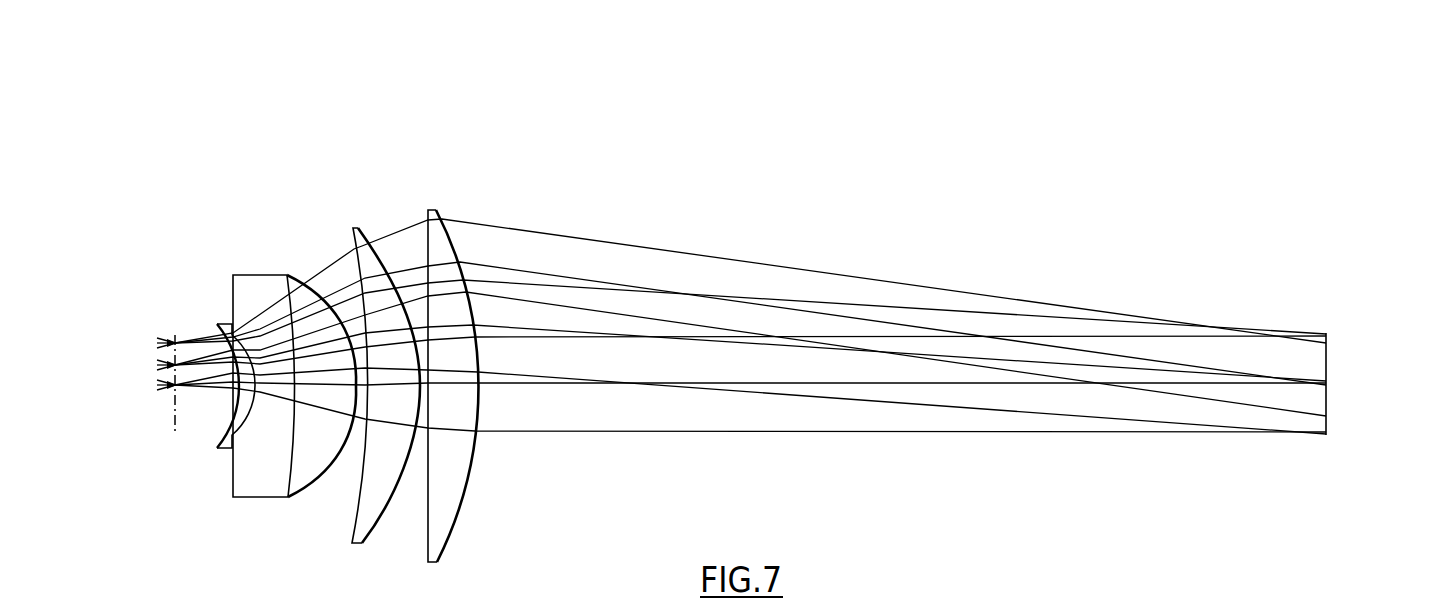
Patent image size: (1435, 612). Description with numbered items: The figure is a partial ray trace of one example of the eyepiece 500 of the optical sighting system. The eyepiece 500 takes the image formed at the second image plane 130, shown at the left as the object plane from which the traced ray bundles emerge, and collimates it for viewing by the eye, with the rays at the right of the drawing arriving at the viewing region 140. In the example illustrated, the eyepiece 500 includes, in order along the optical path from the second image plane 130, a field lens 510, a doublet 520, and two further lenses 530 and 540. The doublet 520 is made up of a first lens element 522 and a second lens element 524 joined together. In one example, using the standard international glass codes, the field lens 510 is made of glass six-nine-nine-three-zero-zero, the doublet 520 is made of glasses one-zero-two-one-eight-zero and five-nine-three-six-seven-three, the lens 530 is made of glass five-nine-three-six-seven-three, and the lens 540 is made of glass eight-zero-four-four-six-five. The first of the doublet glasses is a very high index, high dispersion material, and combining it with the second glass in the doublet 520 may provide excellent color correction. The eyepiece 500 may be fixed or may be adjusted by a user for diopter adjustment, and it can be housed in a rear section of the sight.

The eyepiece 500 is at (120, 105).
The second image plane 130 is at (175, 430).
The image plane 140 is at (1336, 358).
The field lens 510 is at (216, 324).
The doublet 520 is at (264, 255).
The first lens element 522 is at (243, 472).
The second lens element 524 is at (318, 458).
The lens 530 is at (367, 250).
The lens 540 is at (462, 500).